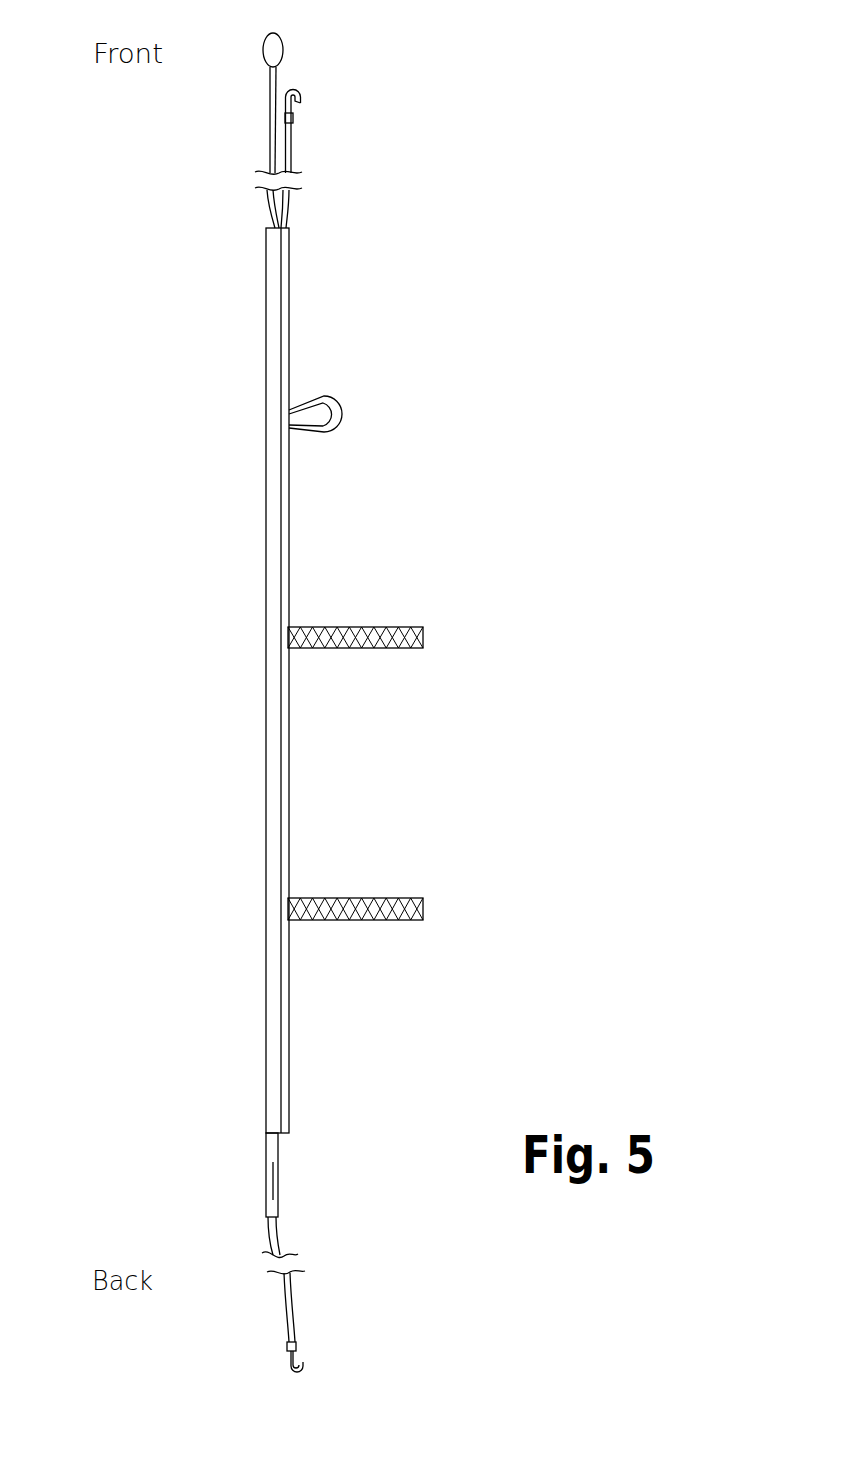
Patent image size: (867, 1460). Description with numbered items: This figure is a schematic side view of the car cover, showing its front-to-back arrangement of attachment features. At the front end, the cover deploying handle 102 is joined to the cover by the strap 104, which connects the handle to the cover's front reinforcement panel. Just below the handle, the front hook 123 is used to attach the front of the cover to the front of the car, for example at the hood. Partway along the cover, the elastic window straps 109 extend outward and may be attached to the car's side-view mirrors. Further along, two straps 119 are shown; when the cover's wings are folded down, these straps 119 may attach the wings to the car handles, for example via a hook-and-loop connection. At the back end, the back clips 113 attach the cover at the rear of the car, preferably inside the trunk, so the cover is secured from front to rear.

The cover deploying handle 102 is at (284, 50).
The strap 104 is at (266, 134).
The front hook 123 is at (331, 129).
The elastic window straps 109 is at (356, 416).
The straps 119 is at (392, 774).
The back clips 113 is at (329, 1329).